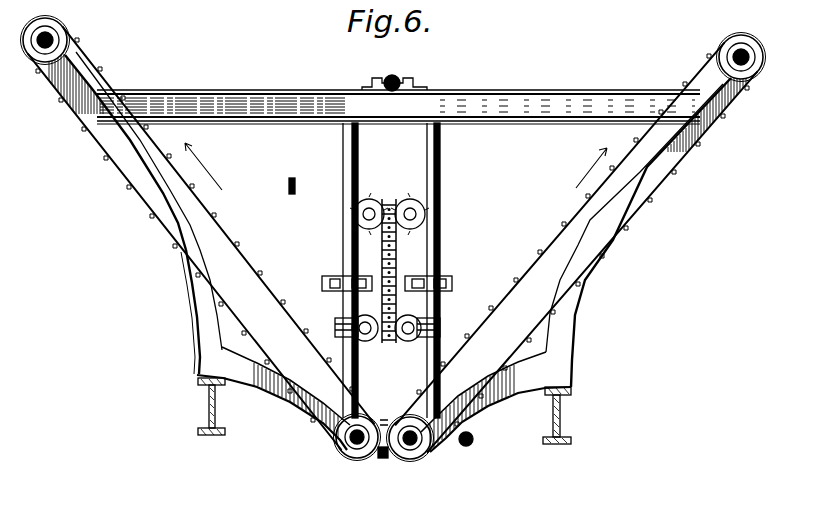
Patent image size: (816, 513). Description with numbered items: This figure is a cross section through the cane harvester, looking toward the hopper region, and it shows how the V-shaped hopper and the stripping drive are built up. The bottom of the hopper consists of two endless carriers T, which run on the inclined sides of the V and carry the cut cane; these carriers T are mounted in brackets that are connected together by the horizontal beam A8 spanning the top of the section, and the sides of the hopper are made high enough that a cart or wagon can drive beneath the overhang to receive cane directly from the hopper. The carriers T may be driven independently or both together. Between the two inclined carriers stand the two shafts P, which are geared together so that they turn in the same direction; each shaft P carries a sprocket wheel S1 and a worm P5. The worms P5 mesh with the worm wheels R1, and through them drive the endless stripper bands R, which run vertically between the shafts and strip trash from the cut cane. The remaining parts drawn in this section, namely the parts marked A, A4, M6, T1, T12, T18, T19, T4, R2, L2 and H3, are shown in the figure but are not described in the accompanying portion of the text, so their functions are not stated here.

The supporting leg A is at (209, 406).
The curved frame girder A4 is at (78, 83).
The beam A8 is at (494, 107).
The bearing on beam M6 is at (399, 78).
The endless carriers T is at (217, 217).
The upper left belt pulley T1 is at (45, 40).
The upper right belt pulley T12 is at (737, 46).
The lower left belt pulley T18 is at (355, 450).
The lower right belt pulley T19 is at (413, 451).
The outer frame curve T4 is at (197, 333).
The shafts P is at (347, 184).
The worms P5 is at (338, 323).
The endless stripper bands R is at (396, 268).
The worm wheels R1 is at (367, 341).
The upper chain sprocket R2 is at (374, 200).
The sprocket wheels S1 is at (325, 277).
The small bar L2 is at (290, 197).
The pivot pin H3 is at (474, 443).